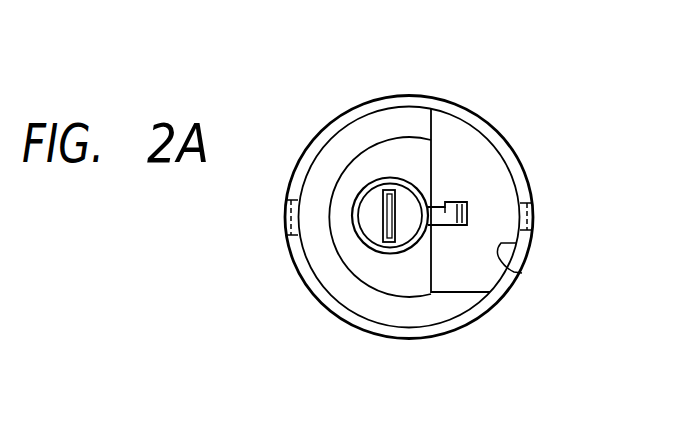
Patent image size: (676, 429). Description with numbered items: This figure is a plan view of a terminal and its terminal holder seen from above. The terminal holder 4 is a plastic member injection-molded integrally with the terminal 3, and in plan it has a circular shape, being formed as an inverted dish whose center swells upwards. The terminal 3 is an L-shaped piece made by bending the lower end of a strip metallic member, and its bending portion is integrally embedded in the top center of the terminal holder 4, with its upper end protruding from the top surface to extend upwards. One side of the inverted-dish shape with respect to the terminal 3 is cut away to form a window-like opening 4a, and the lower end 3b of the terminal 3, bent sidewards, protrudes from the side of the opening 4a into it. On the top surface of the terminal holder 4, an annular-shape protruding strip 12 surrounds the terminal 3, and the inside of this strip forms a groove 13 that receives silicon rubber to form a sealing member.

The terminal 3 is at (384, 216).
The lower end of the terminal 3b is at (440, 210).
The terminal holder 4 is at (392, 102).
The window-like opening 4a is at (521, 273).
The annular-shape protruding strip 12 is at (353, 212).
The groove 13 is at (407, 230).